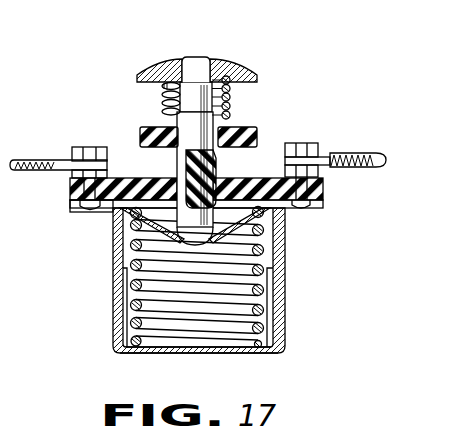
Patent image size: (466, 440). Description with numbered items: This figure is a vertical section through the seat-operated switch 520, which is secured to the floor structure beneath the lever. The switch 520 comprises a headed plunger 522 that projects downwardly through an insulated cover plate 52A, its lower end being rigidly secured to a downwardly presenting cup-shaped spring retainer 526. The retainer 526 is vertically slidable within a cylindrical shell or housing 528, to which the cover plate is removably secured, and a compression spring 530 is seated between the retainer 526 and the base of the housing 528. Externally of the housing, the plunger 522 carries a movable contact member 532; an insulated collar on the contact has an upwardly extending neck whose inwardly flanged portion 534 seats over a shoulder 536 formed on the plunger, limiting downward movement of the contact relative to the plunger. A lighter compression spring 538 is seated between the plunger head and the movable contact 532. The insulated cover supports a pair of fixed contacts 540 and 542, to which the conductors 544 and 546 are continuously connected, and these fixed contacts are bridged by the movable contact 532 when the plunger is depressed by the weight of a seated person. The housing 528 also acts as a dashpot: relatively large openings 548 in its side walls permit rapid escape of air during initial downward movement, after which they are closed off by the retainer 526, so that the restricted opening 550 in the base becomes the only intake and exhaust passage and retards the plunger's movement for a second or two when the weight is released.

The switch 520 is at (194, 58).
The headed plunger 522 is at (180, 152).
The cup-shaped spring retainer 526 is at (286, 226).
The cylindrical shell (housing) 528 is at (283, 302).
The compression spring 530 is at (264, 328).
The movable contact member 532 is at (257, 128).
The inwardly flanged portion 534 is at (230, 96).
The shoulder 536 is at (203, 78).
The compression spring 538 is at (165, 93).
The fixed contact 540 is at (224, 178).
The fixed contact 542 is at (138, 178).
The conductor 544 is at (353, 153).
The conductor 546 is at (22, 157).
The side wall openings 548 is at (284, 272).
The restricted opening 550 is at (170, 353).
The insulating plate 52A is at (230, 177).